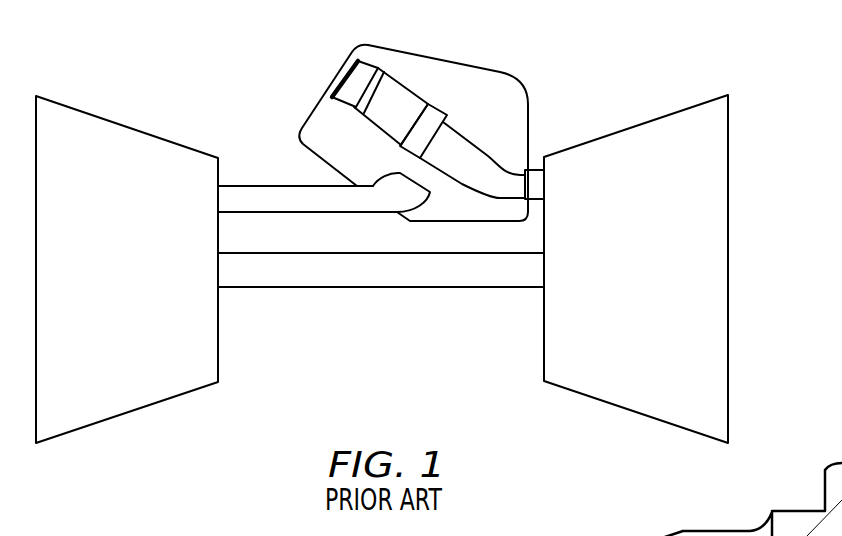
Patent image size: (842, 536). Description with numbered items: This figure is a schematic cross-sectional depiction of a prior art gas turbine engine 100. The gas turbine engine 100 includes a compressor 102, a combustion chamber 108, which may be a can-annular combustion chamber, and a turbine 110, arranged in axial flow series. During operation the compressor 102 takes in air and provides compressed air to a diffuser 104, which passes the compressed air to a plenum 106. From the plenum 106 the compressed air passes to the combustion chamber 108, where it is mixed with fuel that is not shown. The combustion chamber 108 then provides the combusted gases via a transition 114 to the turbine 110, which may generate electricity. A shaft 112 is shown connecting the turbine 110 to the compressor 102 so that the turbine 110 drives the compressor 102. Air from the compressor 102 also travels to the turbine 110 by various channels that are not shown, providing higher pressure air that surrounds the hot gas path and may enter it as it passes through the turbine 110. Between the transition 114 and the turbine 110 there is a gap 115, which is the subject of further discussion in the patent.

The gas turbine engine 100 is at (213, 62).
The compressor 102 is at (176, 282).
The diffuser 104 is at (295, 185).
The plenum 106 is at (450, 87).
The combustion chamber 108 is at (392, 112).
The turbine 110 is at (644, 280).
The shaft 112 is at (402, 287).
The transition 114 is at (457, 155).
The gap 115 is at (535, 170).